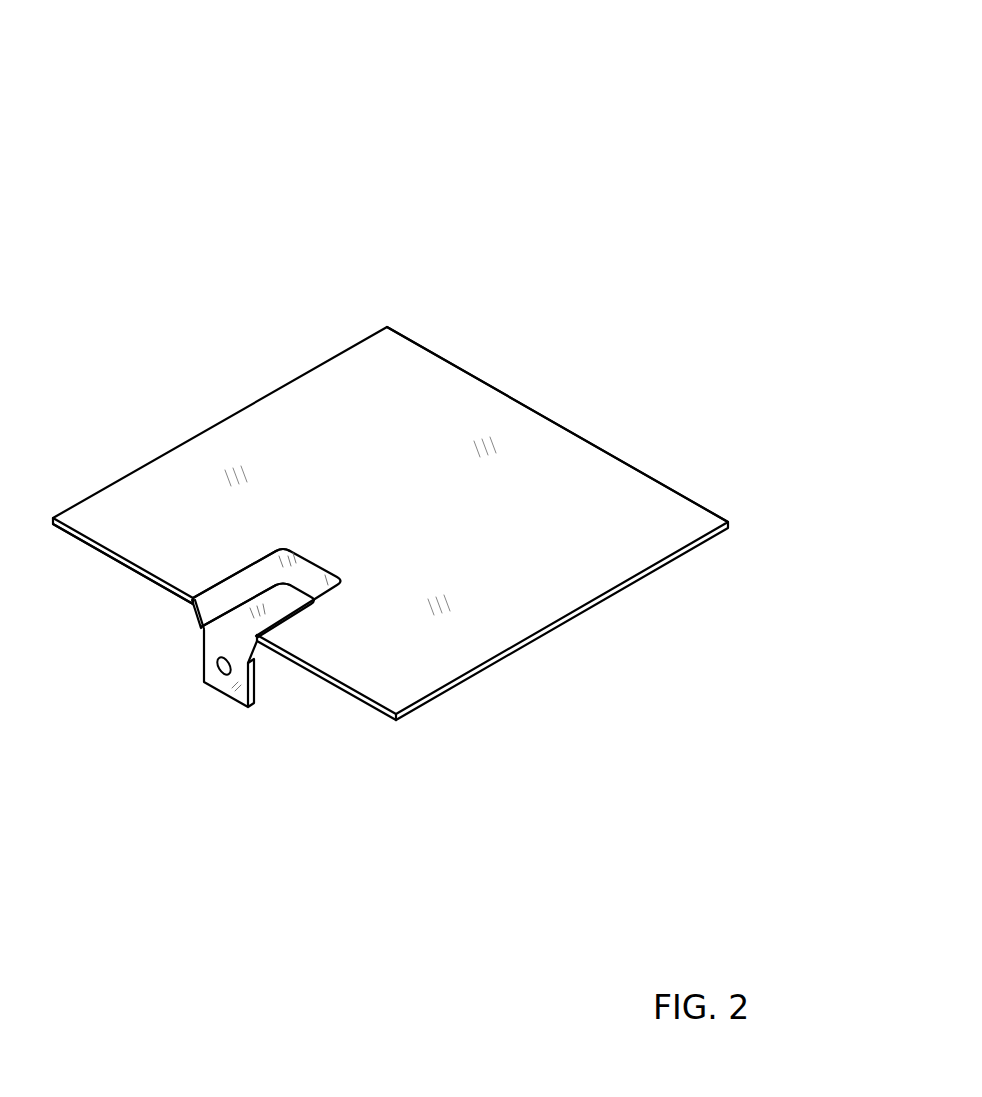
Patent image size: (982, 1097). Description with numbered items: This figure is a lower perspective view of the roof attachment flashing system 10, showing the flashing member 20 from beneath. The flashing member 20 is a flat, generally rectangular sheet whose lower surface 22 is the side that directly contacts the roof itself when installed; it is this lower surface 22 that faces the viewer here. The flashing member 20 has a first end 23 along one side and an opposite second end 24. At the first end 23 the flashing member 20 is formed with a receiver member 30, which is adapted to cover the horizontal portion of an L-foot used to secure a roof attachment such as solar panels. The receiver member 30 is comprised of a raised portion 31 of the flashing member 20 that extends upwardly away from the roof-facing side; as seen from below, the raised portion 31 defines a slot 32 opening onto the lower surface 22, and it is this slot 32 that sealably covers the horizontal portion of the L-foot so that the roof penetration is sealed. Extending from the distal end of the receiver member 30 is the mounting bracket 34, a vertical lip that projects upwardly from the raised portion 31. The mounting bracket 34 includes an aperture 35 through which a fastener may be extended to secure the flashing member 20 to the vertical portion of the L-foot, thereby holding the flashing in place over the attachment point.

The roof attachment flashing system 10 is at (124, 84).
The flashing member 20 is at (480, 362).
The lower surface 22 is at (347, 425).
The first end 23 is at (110, 556).
The second end 24 is at (593, 441).
The receiver member 30 is at (190, 688).
The raised portion 31 is at (194, 612).
The slot 32 is at (233, 636).
The mounting bracket 34 is at (228, 692).
The aperture 35 is at (218, 665).